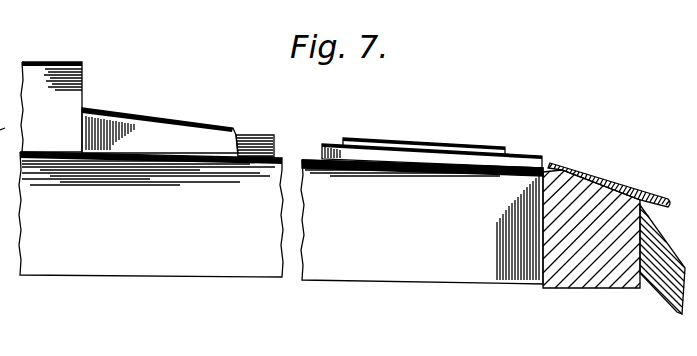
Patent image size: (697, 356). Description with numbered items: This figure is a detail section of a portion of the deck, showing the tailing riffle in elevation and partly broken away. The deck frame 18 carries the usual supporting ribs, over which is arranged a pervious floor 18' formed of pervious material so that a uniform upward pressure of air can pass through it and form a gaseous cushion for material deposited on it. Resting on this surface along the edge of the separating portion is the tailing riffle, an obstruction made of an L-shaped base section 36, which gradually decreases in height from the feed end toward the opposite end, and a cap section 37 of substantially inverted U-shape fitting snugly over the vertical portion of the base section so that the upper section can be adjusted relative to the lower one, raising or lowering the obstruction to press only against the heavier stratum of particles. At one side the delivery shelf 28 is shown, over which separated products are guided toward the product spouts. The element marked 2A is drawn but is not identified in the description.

The block 2A is at (51, 107).
The cap section 37 is at (138, 117).
The L-shaped base section 36 is at (273, 138).
The deck frame 18 is at (281, 218).
The pervious floor 18' is at (422, 177).
The delivery shelf 28 is at (660, 292).